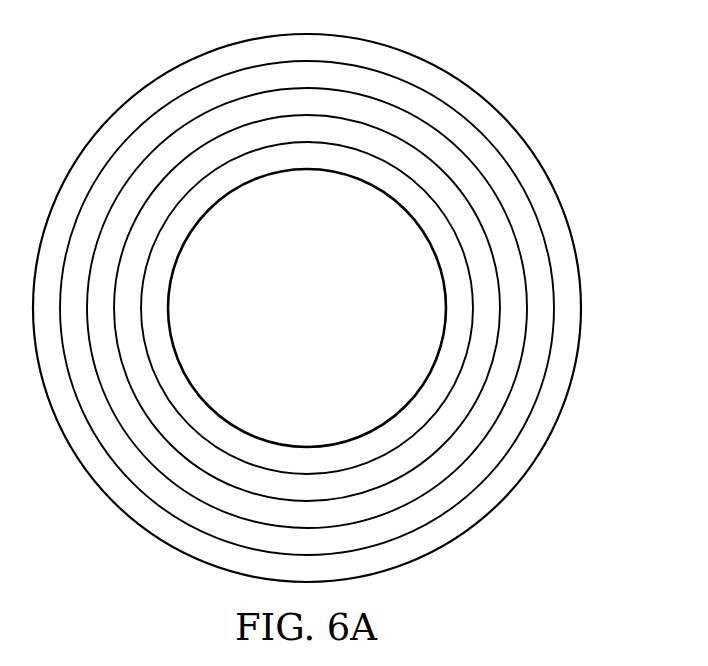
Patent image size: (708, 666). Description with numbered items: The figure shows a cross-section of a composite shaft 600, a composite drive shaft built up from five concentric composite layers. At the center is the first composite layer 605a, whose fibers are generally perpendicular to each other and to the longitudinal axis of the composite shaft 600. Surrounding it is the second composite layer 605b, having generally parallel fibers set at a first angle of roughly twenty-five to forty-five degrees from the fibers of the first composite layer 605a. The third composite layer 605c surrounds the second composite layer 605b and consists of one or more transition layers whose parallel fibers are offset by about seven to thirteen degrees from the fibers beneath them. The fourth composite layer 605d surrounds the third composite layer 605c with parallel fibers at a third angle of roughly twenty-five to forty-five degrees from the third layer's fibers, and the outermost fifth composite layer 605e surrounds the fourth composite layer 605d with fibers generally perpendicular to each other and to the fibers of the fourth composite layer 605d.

The composite shaft 600 is at (76, 90).
The first composite layer 605a is at (352, 162).
The second composite layer 605b is at (422, 170).
The third composite layer 605c is at (483, 200).
The fourth composite layer 605d is at (525, 225).
The fifth composite layer 605e is at (570, 272).